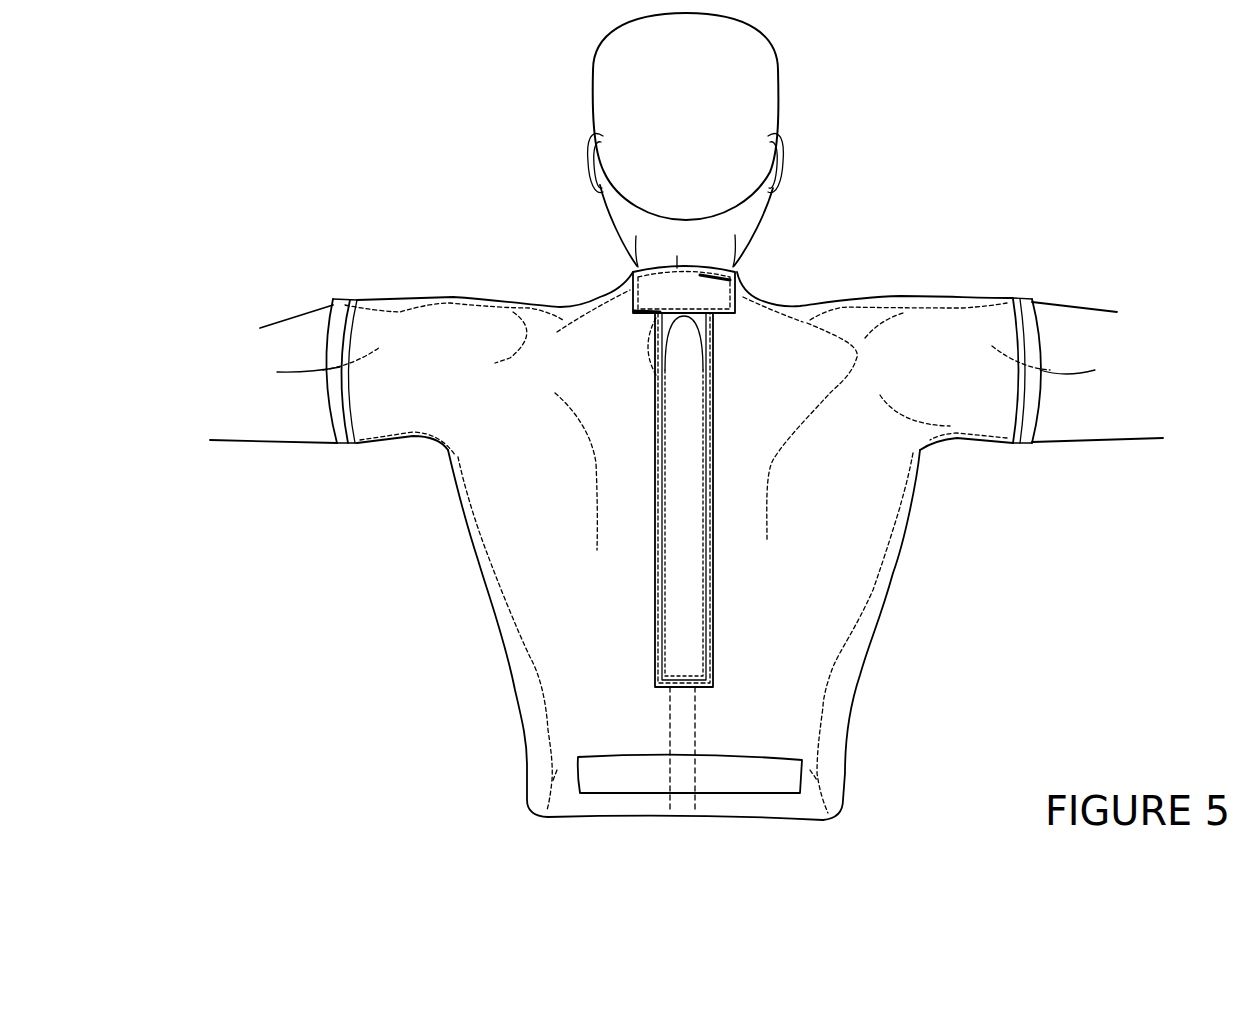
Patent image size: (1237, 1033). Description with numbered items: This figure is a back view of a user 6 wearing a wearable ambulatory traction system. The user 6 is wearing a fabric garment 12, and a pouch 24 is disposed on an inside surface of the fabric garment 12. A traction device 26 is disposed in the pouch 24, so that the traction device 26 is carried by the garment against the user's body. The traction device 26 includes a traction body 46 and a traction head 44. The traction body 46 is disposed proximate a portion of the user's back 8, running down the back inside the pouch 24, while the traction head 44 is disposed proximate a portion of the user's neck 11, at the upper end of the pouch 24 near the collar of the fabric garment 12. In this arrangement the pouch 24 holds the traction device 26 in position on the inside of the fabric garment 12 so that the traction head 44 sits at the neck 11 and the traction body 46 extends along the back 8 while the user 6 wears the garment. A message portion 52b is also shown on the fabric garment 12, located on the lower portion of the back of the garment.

The user 6 is at (777, 108).
The user's back 8 is at (817, 613).
The user's neck 11 is at (717, 253).
The fabric garment 12 is at (805, 298).
The pouch 24 is at (717, 347).
The traction device 26 is at (721, 705).
The traction head 44 is at (660, 287).
The traction body 46 is at (672, 625).
The message portion 52b is at (743, 777).